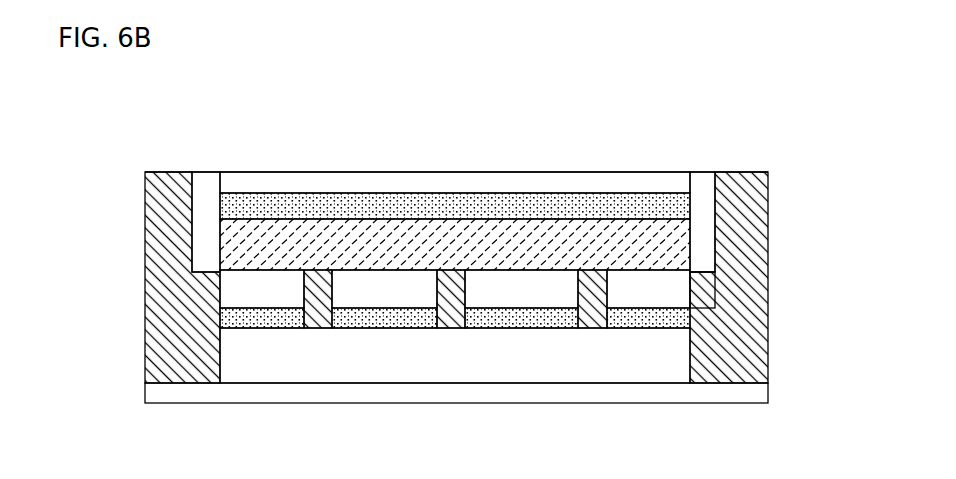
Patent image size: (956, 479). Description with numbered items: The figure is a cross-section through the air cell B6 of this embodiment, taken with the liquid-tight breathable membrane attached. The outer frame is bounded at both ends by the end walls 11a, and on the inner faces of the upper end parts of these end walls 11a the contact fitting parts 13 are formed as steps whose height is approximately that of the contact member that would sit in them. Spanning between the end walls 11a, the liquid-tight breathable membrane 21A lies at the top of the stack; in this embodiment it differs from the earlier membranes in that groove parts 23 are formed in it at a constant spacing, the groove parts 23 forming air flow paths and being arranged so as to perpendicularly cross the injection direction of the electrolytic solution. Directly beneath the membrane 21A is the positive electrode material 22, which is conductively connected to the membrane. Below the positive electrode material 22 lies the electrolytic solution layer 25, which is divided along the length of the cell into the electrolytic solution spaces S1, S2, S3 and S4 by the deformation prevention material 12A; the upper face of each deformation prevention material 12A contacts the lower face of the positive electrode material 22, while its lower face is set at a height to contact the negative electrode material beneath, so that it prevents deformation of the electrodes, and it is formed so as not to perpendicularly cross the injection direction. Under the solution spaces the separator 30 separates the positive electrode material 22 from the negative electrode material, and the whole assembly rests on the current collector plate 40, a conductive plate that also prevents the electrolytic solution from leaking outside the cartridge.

The air cell B6 is at (143, 171).
The end wall 11a is at (145, 291).
The contact fitting part 13 is at (205, 172).
The groove part 23 is at (229, 171).
The liquid-tight breathable membrane 21A is at (220, 206).
The positive electrode material 22 is at (220, 246).
The separator 30 is at (220, 319).
The deformation prevention material 12A is at (322, 318).
The electrolytic solution layer 25 is at (672, 292).
The current collector plate 40 is at (750, 404).
The electrolytic solution space S1 is at (280, 302).
The electrolytic solution space S2 is at (390, 302).
The electrolytic solution space S3 is at (530, 302).
The electrolytic solution space S4 is at (658, 302).